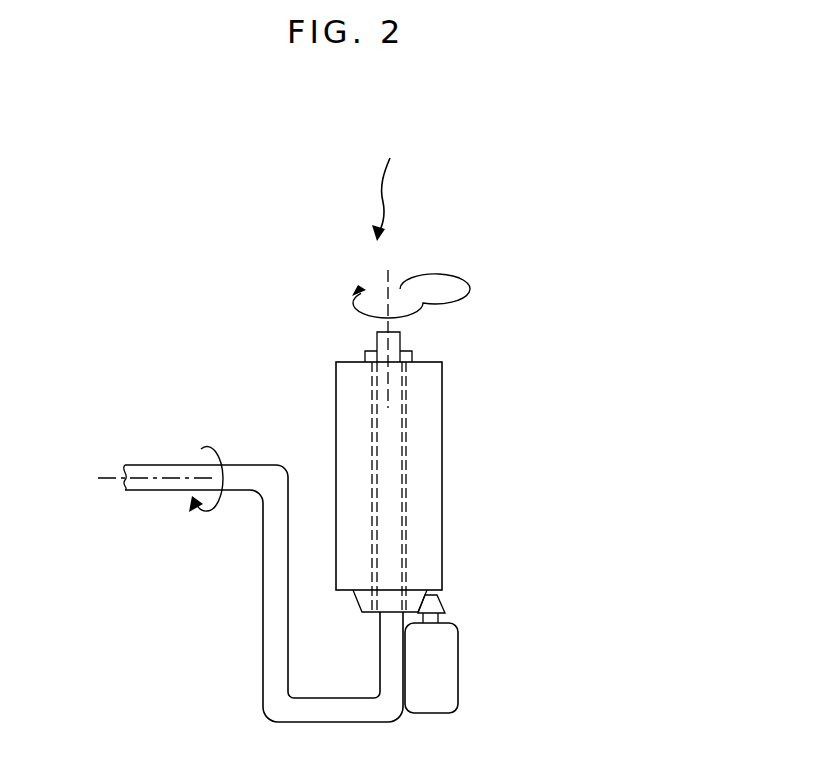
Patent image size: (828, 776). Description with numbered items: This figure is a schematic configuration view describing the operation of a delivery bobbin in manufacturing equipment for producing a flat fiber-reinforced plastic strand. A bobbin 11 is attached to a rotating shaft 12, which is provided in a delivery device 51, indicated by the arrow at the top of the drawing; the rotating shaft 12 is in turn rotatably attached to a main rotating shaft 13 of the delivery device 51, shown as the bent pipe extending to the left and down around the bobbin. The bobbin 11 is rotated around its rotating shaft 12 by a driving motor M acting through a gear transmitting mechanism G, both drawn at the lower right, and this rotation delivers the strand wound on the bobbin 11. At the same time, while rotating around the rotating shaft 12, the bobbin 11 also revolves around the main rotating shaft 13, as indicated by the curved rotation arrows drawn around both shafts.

The delivery device 51 is at (387, 188).
The rotating shaft 12 is at (393, 340).
The bobbin 11 is at (422, 433).
The main rotating shaft 13 is at (243, 478).
The gear transmitting mechanism G is at (440, 603).
The driving motor M is at (442, 678).